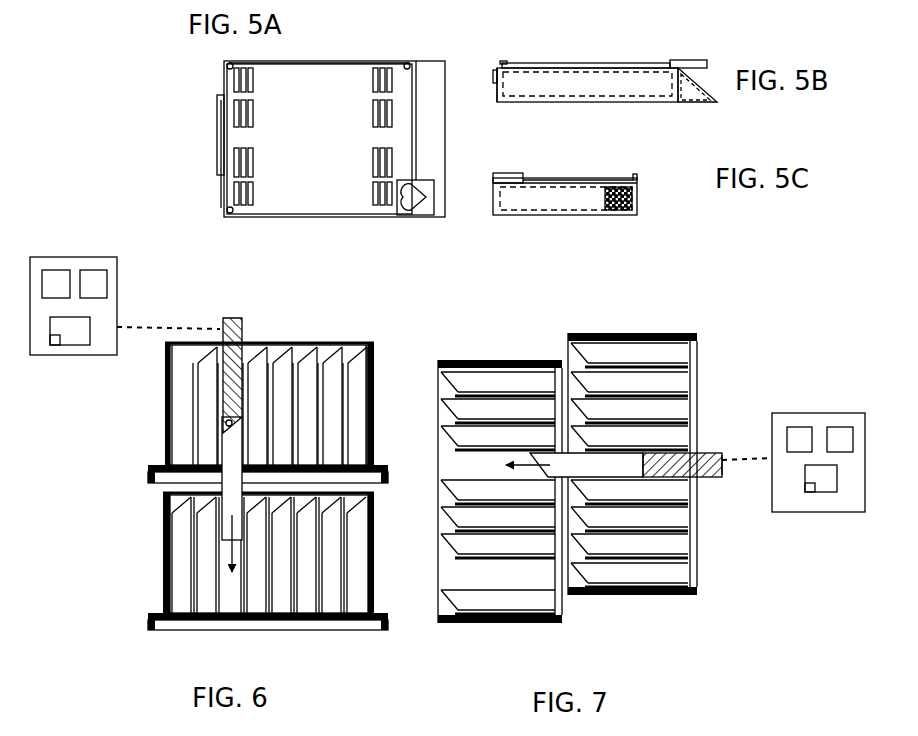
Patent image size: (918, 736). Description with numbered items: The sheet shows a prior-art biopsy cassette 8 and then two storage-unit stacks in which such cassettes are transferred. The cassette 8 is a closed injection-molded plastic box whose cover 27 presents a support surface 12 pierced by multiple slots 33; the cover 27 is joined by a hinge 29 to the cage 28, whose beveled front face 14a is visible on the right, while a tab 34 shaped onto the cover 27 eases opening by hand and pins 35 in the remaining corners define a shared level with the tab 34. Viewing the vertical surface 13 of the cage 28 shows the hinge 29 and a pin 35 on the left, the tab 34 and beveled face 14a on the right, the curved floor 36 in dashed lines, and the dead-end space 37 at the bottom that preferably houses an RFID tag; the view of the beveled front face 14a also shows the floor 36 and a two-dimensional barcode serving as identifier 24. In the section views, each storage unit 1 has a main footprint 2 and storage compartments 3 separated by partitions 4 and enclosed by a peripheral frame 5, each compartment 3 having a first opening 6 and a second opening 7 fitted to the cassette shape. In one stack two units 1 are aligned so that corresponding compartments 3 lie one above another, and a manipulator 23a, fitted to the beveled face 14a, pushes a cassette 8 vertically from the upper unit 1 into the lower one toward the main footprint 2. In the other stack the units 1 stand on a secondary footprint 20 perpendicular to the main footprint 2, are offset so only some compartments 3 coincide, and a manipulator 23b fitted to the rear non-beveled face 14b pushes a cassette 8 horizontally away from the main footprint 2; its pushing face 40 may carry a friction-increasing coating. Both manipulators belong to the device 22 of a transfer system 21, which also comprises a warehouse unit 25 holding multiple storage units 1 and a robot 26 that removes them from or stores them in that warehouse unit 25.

In FIG. 6, the storage unit 1 is at (357, 322).
In FIG. 7, the storage unit 1 is at (462, 335).
In FIG. 6, the main footprint 2 is at (158, 484).
In FIG. 7, the main footprint 2 is at (699, 352).
In FIG. 6, the storage compartment 3 is at (333, 444).
In FIG. 7, the storage compartment 3 is at (484, 473).
In FIG. 6, the partition 4 is at (318, 366).
In FIG. 7, the partition 4 is at (517, 589).
In FIG. 6, the peripheral frame 5 is at (165, 395).
In FIG. 7, the peripheral frame 5 is at (530, 362).
In FIG. 6, the first opening 6 is at (332, 358).
In FIG. 7, the first opening 6 is at (452, 568).
In FIG. 6, the second opening 7 is at (332, 473).
In FIG. 7, the second opening 7 is at (548, 573).
In FIG. 6, the biopsy cassette 8 is at (282, 419).
In FIG. 7, the biopsy cassette 8 is at (513, 416).
In FIG. 5A, the support surface 12 is at (314, 131).
In FIG. 5B, the vertical surface 13 is at (594, 94).
In FIG. 5A, the beveled front face 14a is at (441, 148).
In FIG. 5B, the beveled front face 14a is at (704, 90).
In FIG. 5C, the beveled front face 14a is at (562, 205).
In FIG. 5A, the rear non-beveled face 14b is at (222, 81).
In FIG. 5B, the rear non-beveled face 14b is at (495, 85).
In FIG. 7, the secondary footprint 20 is at (535, 625).
In FIG. 6, the transfer system 21 is at (45, 258).
In FIG. 7, the transfer system 21 is at (812, 414).
In FIG. 6, the device 22 is at (102, 292).
In FIG. 7, the device 22 is at (848, 448).
In FIG. 6, the manipulator 23a is at (223, 323).
In FIG. 7, the manipulator 23b is at (713, 478).
In FIG. 5C, the identifier 24 is at (633, 198).
In FIG. 6, the warehouse unit 25 is at (79, 338).
In FIG. 7, the warehouse unit 25 is at (831, 486).
In FIG. 6, the robot 26 is at (64, 292).
In FIG. 7, the robot 26 is at (808, 448).
In FIG. 5A, the cover 27 is at (329, 85).
In FIG. 5B, the cover 27 is at (650, 64).
In FIG. 5C, the cover 27 is at (583, 181).
In FIG. 6, the cover 27 is at (55, 346).
In FIG. 7, the cover 27 is at (811, 494).
In FIG. 5B, the cage 28 is at (541, 86).
In FIG. 5C, the cage 28 is at (522, 199).
In FIG. 5A, the hinge 29 is at (220, 143).
In FIG. 5B, the hinge 29 is at (496, 70).
In FIG. 5A, the slots 33 is at (236, 187).
In FIG. 5A, the tab 34 is at (418, 204).
In FIG. 5B, the tab 34 is at (695, 61).
In FIG. 5A, the pin 35 is at (228, 209).
In FIG. 5B, the pin 35 is at (504, 63).
In FIG. 5C, the pin 35 is at (505, 176).
In FIG. 5B, the floor 36 is at (636, 97).
In FIG. 5C, the floor 36 is at (606, 212).
In FIG. 5B, the dead-end space 37 is at (690, 97).
In FIG. 6, the pushing face 40 is at (181, 425).
In FIG. 7, the pushing face 40 is at (700, 462).